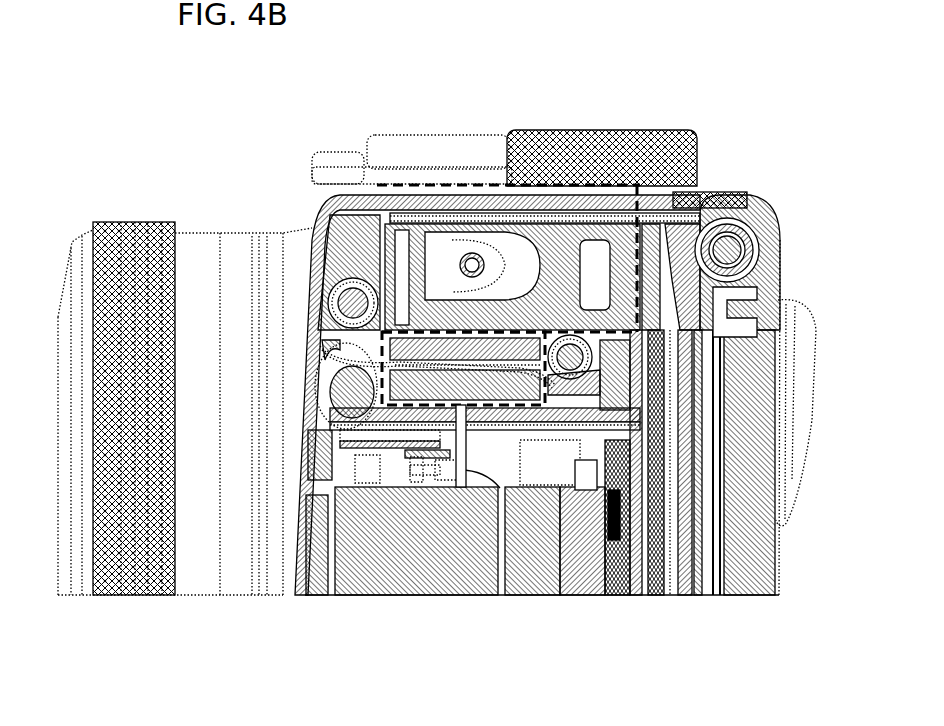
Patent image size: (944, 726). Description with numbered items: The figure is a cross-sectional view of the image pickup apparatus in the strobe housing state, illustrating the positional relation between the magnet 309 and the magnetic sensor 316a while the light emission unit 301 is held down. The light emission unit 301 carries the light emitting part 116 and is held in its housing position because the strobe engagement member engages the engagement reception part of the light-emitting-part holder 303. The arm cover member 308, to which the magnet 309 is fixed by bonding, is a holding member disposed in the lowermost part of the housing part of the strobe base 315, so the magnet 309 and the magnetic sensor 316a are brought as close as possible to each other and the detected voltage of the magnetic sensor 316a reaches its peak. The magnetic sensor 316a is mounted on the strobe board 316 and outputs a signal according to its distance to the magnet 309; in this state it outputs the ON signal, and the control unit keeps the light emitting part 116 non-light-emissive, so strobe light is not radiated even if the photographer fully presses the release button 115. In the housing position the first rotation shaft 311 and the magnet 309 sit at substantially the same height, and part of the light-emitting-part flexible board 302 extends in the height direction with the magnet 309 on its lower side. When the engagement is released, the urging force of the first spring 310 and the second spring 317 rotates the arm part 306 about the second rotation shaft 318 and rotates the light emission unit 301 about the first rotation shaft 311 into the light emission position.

The release button 115 is at (400, 135).
The light emitting part 116 is at (410, 247).
The light emission unit 301 is at (652, 215).
The light-emitting-part flexible board 302 is at (305, 372).
The light-emitting-part holder 303 is at (397, 317).
The arm part 306 is at (457, 405).
The arm cover member 308 is at (513, 392).
The magnet 309 is at (425, 385).
The first spring 310 is at (590, 352).
The first rotation shaft 311 is at (595, 376).
The strobe base 315 is at (635, 400).
The strobe board 316 is at (605, 512).
The magnetic sensor 316a is at (592, 470).
The second spring 317 is at (345, 298).
The second rotation shaft 318 is at (340, 306).